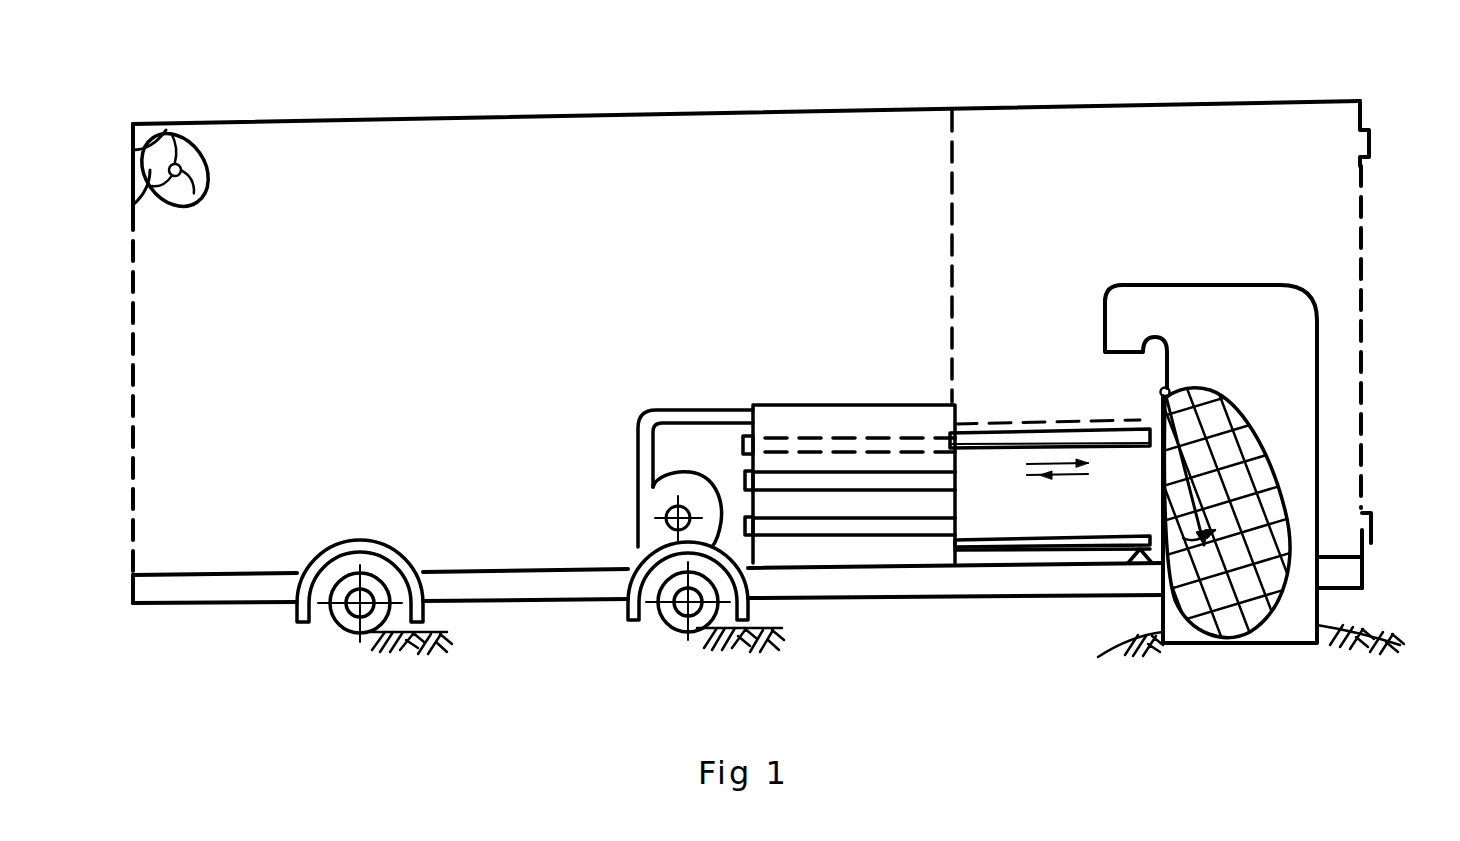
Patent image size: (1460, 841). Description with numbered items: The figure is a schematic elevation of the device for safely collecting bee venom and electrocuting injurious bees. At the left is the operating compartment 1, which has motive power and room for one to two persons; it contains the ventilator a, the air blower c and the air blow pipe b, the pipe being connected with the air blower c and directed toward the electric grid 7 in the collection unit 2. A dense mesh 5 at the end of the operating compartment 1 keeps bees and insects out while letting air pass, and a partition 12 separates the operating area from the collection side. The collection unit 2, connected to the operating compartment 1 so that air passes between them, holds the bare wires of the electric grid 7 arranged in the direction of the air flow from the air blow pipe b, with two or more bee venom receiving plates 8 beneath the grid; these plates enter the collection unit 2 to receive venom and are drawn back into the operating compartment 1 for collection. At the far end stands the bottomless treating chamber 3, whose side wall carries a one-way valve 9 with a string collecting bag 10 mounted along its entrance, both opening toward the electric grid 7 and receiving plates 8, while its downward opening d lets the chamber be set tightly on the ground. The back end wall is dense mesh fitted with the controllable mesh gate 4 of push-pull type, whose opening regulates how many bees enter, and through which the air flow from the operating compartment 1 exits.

The operating compartment 1 is at (459, 118).
The rear compartment partition 12 is at (1133, 105).
The ventilator a is at (206, 160).
The air blow pipe b is at (679, 422).
The air blower c is at (640, 522).
The downward opening d is at (1123, 347).
The collection unit 2 is at (1041, 507).
The treating chamber 3 is at (1256, 285).
The controllable mesh gate 4 is at (1366, 290).
The dense mesh 5 is at (129, 350).
The electric grid 7 is at (1019, 423).
The bee venom receiving plates 8 is at (1099, 443).
The one-way valve 9 is at (1198, 510).
The string collecting bag 10 is at (1248, 433).